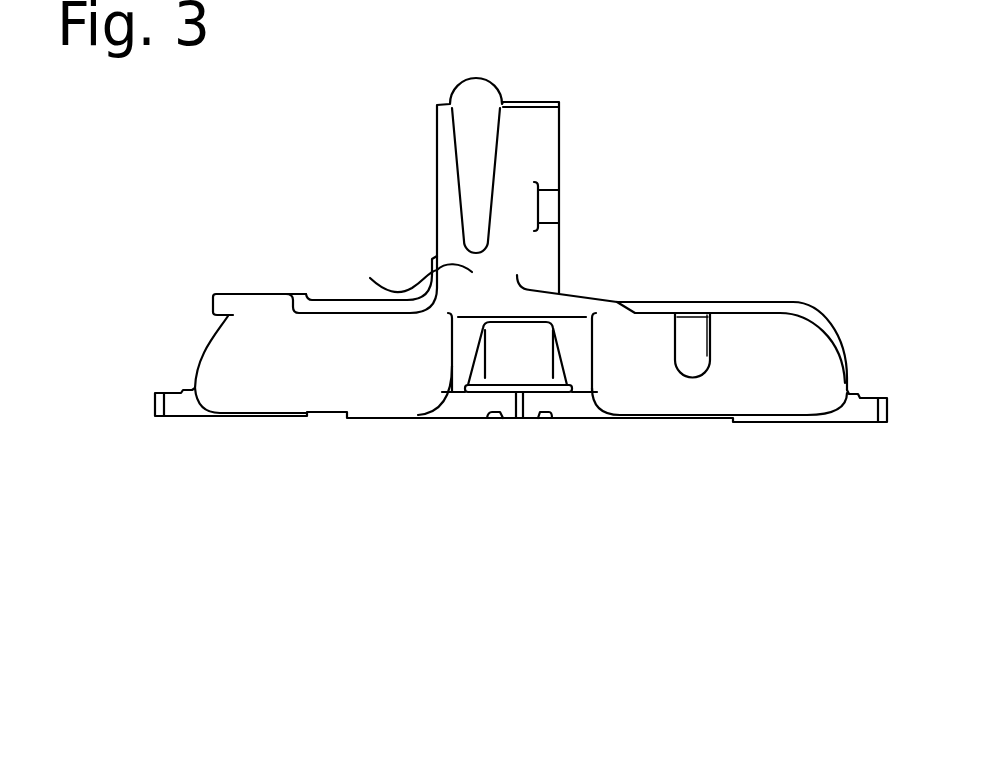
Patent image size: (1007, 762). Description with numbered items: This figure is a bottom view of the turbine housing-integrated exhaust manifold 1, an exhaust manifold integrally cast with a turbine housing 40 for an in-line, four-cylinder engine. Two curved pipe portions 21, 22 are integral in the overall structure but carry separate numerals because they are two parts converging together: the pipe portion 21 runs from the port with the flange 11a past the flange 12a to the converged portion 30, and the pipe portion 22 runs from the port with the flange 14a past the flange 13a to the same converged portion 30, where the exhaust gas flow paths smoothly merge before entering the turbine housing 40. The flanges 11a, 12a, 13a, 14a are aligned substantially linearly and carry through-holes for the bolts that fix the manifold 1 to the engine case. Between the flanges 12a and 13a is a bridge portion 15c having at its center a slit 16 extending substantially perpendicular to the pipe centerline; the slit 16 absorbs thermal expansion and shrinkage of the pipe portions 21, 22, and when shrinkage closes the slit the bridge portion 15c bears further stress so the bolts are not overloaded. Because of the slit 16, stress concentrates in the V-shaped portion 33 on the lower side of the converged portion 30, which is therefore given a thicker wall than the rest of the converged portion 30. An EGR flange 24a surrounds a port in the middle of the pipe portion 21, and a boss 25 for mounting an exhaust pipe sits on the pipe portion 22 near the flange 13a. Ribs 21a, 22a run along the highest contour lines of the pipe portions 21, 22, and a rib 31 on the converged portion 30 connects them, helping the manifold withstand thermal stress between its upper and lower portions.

The turbine housing-integrated exhaust manifold 1 is at (726, 155).
The flange 11a is at (193, 410).
The flange 12a is at (428, 412).
The flange 13a is at (605, 415).
The flange 14a is at (837, 415).
The bridge portion 15c is at (501, 416).
The slit 16 is at (524, 416).
The pipe portion 21 is at (326, 387).
The rib 21a is at (320, 297).
The pipe portion 22 is at (762, 390).
The rib 22a is at (725, 303).
The EGR flange 24a is at (232, 295).
The boss 25 is at (693, 363).
The converged portion 30 is at (412, 269).
The rib 31 is at (565, 300).
The V-shaped portion 33 is at (530, 368).
The turbine housing 40 is at (520, 142).